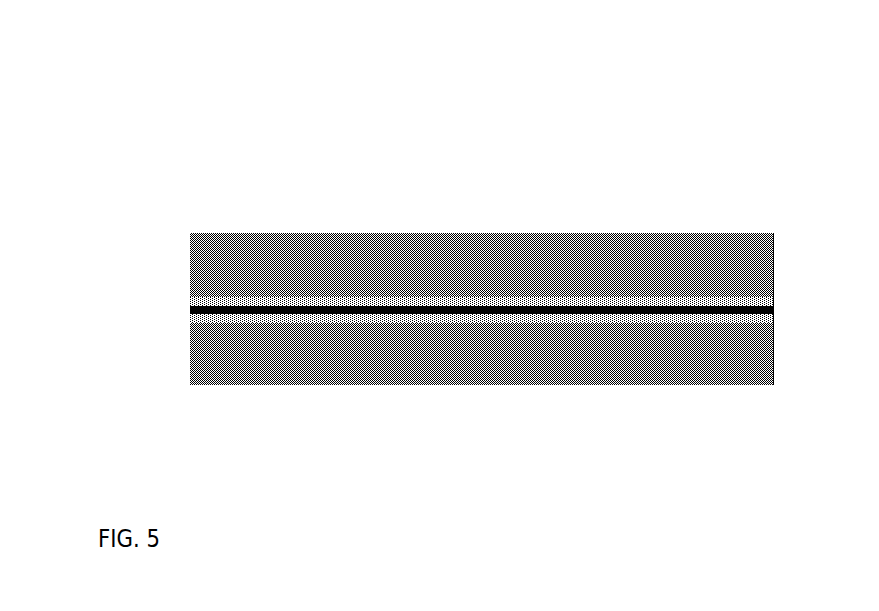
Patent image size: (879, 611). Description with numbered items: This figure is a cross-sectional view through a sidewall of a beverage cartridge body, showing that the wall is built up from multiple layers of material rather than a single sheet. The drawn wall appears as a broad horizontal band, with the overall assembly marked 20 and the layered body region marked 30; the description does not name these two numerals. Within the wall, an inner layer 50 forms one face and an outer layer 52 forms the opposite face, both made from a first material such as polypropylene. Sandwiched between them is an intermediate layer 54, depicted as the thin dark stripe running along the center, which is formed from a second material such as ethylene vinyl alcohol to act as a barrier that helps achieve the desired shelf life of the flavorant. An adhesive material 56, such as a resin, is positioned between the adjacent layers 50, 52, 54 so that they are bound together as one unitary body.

The composite panel assembly 20 is at (108, 80).
The layered body 30 is at (422, 319).
The inner layer 50 is at (257, 268).
The outer layer 52 is at (345, 365).
The intermediate layer 54 is at (188, 307).
The adhesive material 56 is at (741, 291).